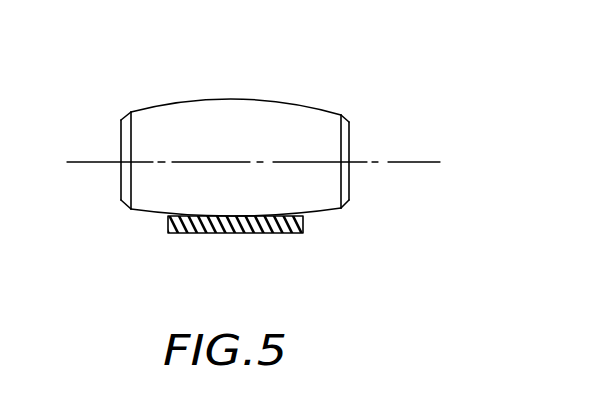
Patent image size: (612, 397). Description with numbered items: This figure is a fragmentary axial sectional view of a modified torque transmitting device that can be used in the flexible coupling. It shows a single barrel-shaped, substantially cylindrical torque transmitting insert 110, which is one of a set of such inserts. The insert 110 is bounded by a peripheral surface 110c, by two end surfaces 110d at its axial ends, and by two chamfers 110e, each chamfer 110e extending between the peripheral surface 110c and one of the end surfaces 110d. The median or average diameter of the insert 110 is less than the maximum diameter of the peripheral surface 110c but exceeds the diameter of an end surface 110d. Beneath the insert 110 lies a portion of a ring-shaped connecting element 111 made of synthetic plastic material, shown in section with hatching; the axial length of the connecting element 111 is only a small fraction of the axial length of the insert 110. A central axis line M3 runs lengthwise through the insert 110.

The torque transmitting insert 110 is at (330, 97).
The peripheral surface 110c is at (208, 100).
The end surface 110d is at (121, 131).
The chamfer 110e is at (127, 111).
The connecting element 111 is at (252, 234).
The center axis line M3 is at (90, 162).